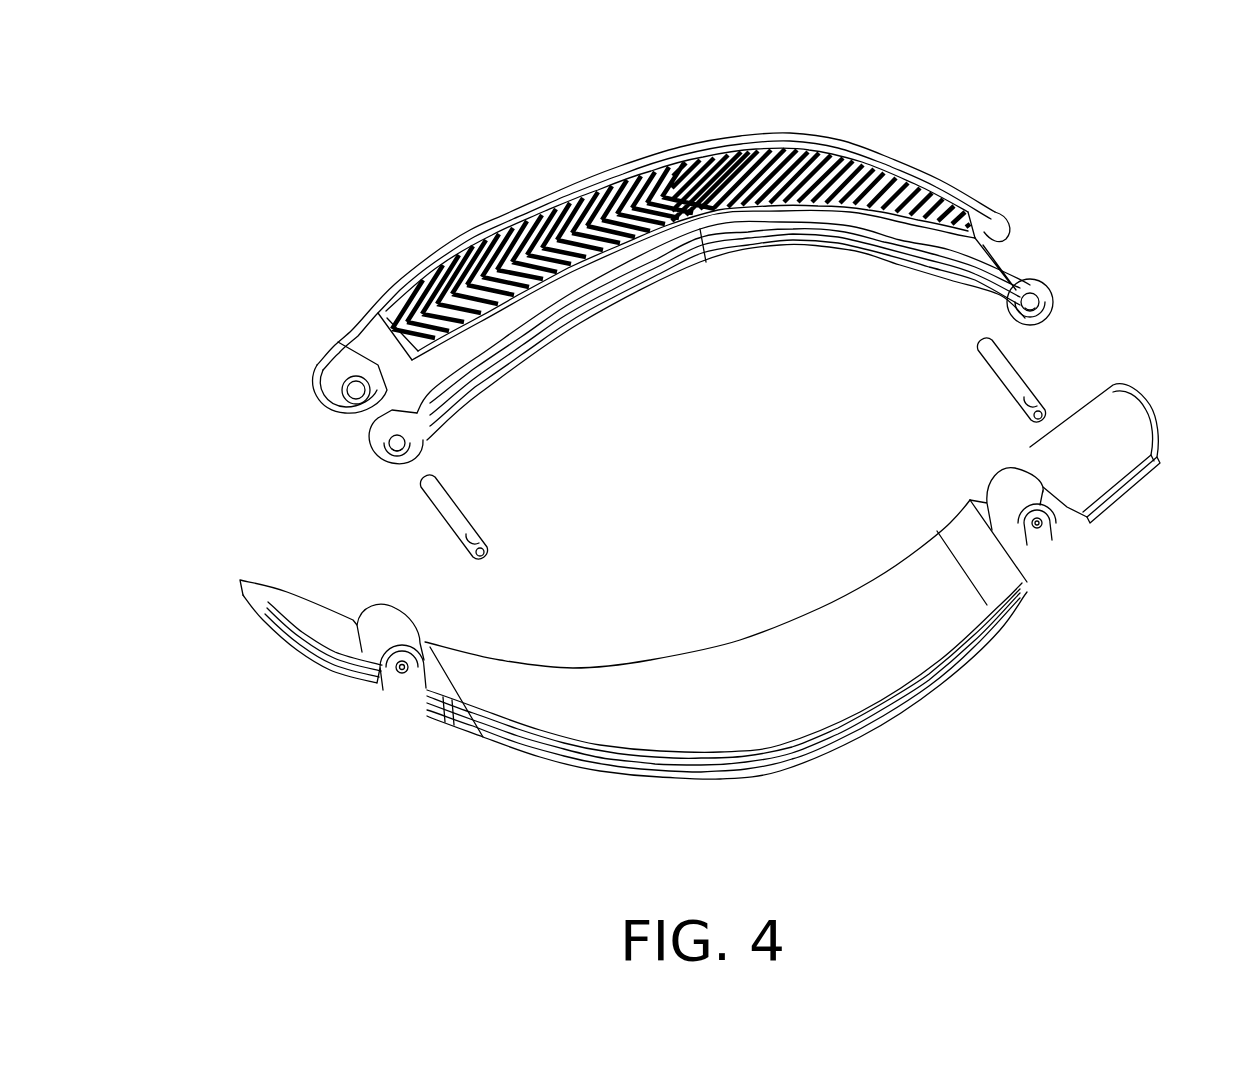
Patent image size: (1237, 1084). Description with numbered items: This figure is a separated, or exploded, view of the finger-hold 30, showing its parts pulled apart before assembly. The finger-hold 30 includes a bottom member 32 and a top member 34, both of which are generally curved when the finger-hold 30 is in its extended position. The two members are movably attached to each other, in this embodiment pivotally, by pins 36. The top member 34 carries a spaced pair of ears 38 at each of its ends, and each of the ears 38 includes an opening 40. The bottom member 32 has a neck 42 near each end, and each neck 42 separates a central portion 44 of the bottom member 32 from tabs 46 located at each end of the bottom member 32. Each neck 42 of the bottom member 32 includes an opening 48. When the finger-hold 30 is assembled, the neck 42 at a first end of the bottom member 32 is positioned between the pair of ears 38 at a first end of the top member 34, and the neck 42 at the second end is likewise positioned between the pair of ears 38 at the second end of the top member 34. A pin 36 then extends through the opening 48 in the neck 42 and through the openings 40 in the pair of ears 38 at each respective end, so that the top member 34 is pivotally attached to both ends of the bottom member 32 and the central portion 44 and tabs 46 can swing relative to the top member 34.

The finger-hold 30 is at (1138, 148).
The bottom member 32 is at (808, 141).
The top member 34 is at (935, 694).
The pins 36 is at (455, 510).
The ears 38 is at (332, 372).
The opening 40 is at (352, 396).
The neck 42 is at (1003, 485).
The central portion 44 is at (707, 718).
The tabs 46 is at (282, 605).
The opening 48 is at (400, 672).